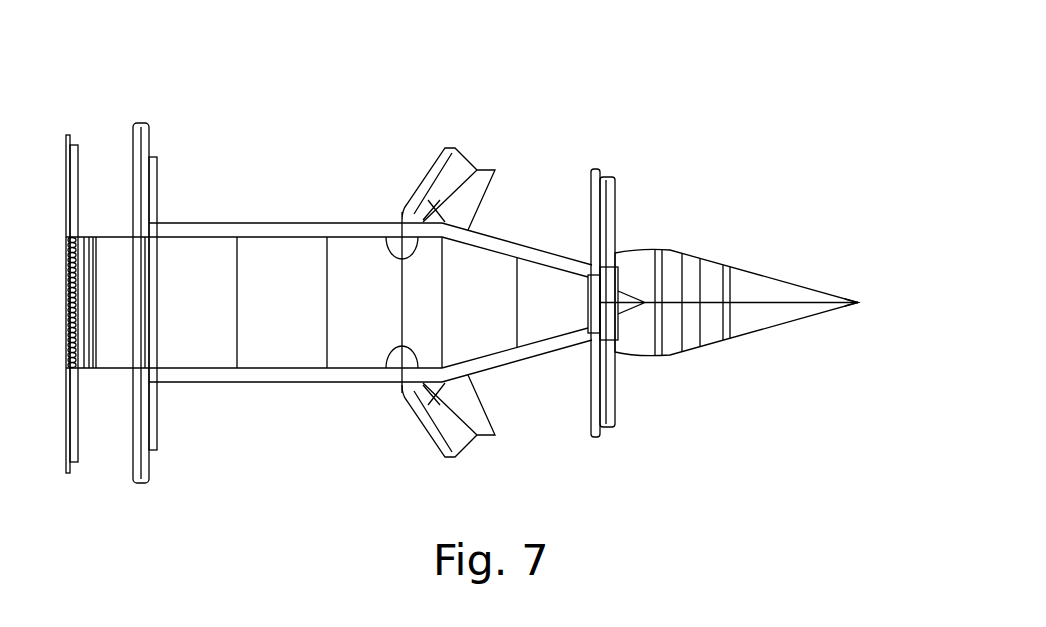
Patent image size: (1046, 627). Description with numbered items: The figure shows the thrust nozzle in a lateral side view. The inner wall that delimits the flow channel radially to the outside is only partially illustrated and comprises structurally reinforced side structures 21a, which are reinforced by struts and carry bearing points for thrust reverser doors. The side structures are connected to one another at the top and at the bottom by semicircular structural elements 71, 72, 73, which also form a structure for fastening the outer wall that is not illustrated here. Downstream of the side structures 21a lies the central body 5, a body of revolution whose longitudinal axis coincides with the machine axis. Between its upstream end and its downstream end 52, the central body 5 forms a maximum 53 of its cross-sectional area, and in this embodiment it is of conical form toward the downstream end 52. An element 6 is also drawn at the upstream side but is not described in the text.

The base plate 6 is at (75, 143).
The semicircular structural element 71 is at (140, 124).
The semicircular structural element 72 is at (453, 148).
The semicircular structural element 73 is at (595, 170).
The reinforced side structure 21a is at (295, 358).
The central body 5 is at (757, 278).
The downstream end 52 is at (858, 303).
The maximum of cross-sectional area 53 is at (657, 252).